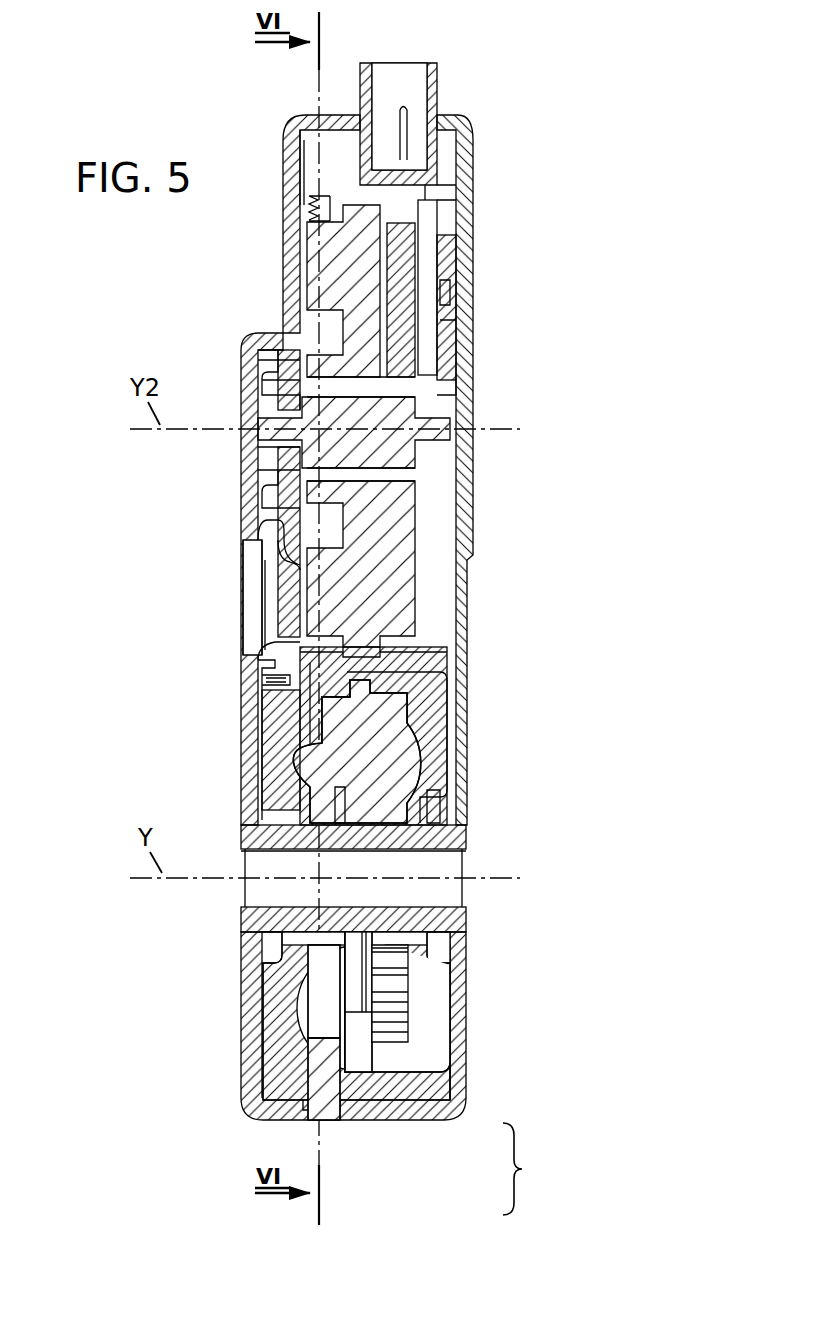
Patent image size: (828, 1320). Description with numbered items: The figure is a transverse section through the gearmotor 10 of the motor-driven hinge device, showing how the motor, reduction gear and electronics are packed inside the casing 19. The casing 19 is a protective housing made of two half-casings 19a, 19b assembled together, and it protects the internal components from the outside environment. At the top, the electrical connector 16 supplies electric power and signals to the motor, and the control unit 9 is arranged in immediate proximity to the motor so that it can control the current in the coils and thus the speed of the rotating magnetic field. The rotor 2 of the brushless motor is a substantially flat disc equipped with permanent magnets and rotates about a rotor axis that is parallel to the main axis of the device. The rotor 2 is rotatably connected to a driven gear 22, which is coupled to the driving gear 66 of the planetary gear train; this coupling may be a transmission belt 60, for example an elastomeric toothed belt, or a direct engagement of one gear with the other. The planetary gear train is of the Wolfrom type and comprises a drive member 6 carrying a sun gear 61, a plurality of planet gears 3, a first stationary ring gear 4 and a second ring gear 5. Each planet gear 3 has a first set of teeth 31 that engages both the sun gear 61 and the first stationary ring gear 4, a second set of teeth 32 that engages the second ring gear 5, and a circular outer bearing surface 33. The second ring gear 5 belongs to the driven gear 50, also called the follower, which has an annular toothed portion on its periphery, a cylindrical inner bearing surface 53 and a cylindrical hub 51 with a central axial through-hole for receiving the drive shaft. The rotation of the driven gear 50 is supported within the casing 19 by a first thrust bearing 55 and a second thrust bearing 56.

The gearmotor 10 is at (560, 130).
The electrical connector 16 is at (433, 98).
The control unit 9 is at (445, 262).
The transmission belt 60 is at (283, 360).
The rotor 2 is at (410, 403).
The driven gear 22 is at (262, 487).
The first stationary ring gear 4 is at (257, 634).
The driving gear 66 is at (280, 680).
The first set of teeth 31 is at (262, 717).
The drive member 6 is at (283, 773).
The sun gear 61 is at (283, 822).
The cylindrical inner bearing surface 53 is at (440, 622).
The second ring gear 5 is at (440, 660).
The second set of teeth 32 is at (440, 720).
The planet gear 3 is at (395, 764).
The cylindrical hub 51 is at (455, 832).
The driven gear 50 is at (416, 952).
The first thrust bearing 55 is at (272, 950).
The second thrust bearing 56 is at (440, 947).
The circular outer bearing surface 33 is at (360, 1067).
The half-casing 19a is at (290, 1120).
The half-casing 19b is at (410, 1120).
The casing 19 is at (529, 1169).